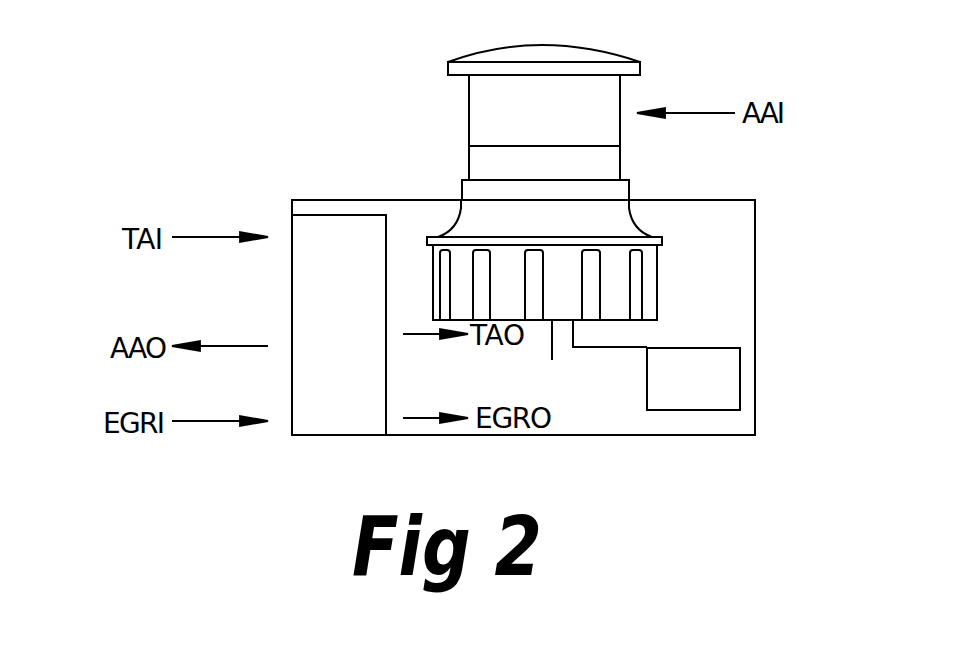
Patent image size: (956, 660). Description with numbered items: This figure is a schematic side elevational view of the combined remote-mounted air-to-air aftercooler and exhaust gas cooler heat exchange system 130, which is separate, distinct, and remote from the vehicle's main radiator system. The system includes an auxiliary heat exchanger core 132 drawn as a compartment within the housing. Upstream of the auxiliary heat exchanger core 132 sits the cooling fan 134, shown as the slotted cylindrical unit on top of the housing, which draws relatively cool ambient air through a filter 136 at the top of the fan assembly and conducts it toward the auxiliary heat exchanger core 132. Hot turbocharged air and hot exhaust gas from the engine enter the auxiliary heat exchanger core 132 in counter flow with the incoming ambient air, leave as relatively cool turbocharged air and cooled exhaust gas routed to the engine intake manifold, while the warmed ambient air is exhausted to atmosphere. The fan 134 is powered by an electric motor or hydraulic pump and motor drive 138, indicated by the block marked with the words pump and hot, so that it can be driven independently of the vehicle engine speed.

The combined remote-mounted air-to-air aftercooler and exhaust gas cooler heat excha 130 is at (292, 125).
The auxiliary heat exchanger core 132 is at (386, 358).
The cooling fan 134 is at (552, 360).
The filter 136 is at (468, 108).
The hydraulic pump and motor drive 138 is at (687, 410).